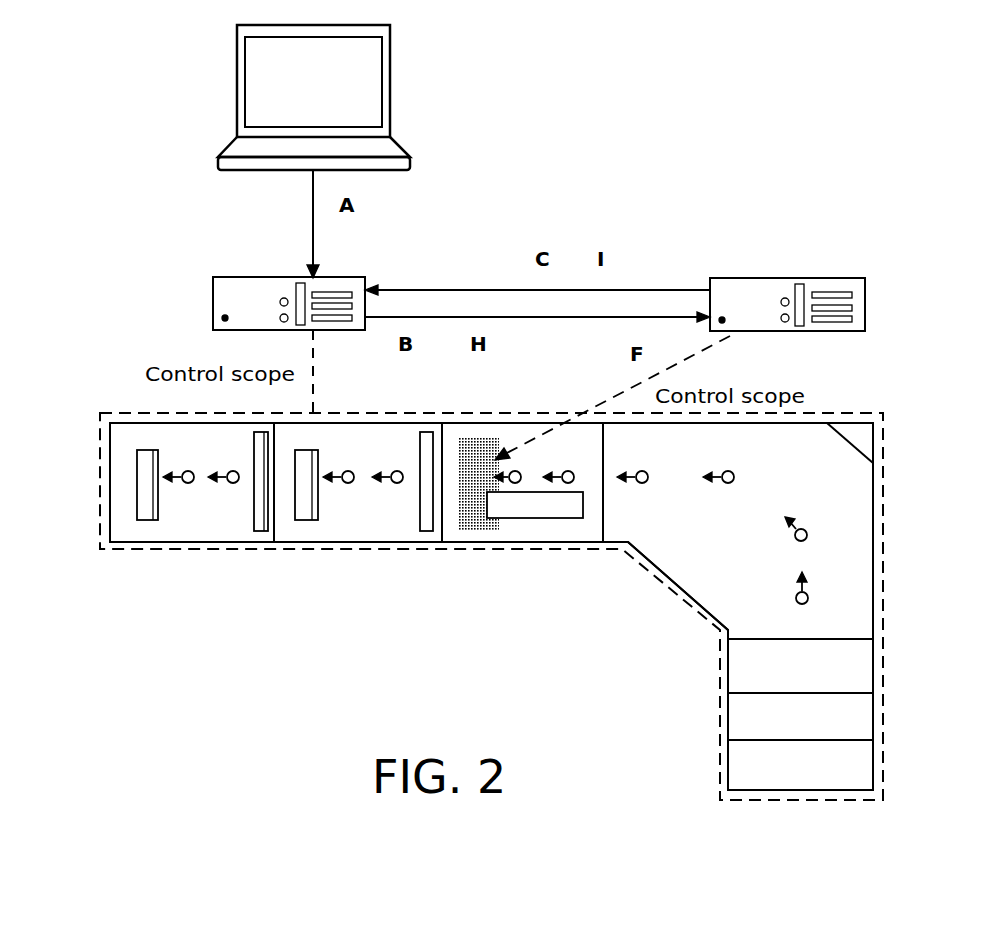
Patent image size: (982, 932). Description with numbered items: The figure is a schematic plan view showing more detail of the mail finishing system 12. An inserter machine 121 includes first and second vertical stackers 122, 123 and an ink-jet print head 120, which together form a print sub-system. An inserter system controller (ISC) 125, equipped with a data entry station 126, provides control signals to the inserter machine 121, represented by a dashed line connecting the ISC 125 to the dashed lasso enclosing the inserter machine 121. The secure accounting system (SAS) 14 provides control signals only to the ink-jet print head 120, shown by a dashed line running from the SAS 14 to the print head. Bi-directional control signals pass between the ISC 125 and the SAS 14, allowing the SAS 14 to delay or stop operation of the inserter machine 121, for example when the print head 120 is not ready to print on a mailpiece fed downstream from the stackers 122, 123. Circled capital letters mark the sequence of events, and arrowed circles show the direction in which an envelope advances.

The data entry station 126 is at (391, 80).
The inserter system controller (ISC) 125 is at (212, 302).
The secure accounting system (SAS) 14 is at (865, 305).
The mail finishing system 12 is at (265, 659).
The first vertical stacker 122 is at (100, 480).
The second vertical stacker 123 is at (285, 543).
The ink-jet print head 120 is at (462, 532).
The inserter machine 121 is at (873, 530).